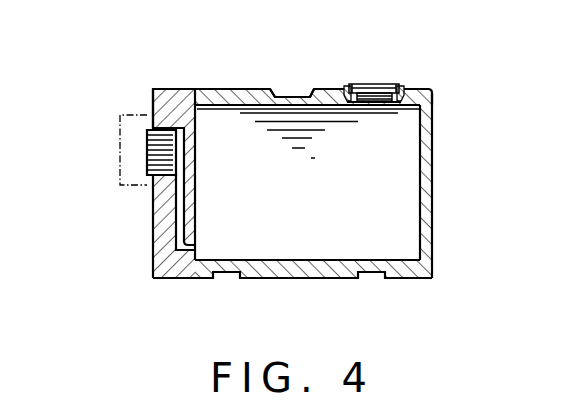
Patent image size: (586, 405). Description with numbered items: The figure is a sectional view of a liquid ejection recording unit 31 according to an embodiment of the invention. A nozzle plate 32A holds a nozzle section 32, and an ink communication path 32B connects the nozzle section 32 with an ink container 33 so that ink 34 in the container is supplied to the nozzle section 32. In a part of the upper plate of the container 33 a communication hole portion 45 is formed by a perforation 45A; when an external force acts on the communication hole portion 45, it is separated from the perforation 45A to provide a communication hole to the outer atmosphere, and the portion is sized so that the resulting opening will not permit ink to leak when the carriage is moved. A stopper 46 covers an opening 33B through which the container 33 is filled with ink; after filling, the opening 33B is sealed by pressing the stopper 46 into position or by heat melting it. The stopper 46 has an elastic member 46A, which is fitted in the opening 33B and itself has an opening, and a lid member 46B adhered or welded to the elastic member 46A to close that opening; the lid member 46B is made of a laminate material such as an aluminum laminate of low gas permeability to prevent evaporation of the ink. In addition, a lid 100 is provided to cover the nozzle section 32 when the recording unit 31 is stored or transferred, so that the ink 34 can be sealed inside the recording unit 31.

The liquid ejection recording unit 31 is at (223, 85).
The nozzle section 32 is at (147, 158).
The nozzle plate 32A is at (172, 90).
The ink communication path 32B is at (173, 278).
The ink container 33 is at (397, 278).
The opening 33B is at (378, 108).
The ink 34 is at (305, 250).
The communication hole portion 45 is at (286, 90).
The perforation 45A is at (306, 90).
The stopper 46 is at (396, 76).
The elastic member 46A is at (410, 83).
The lid member 46B is at (367, 88).
The lid 100 is at (121, 186).